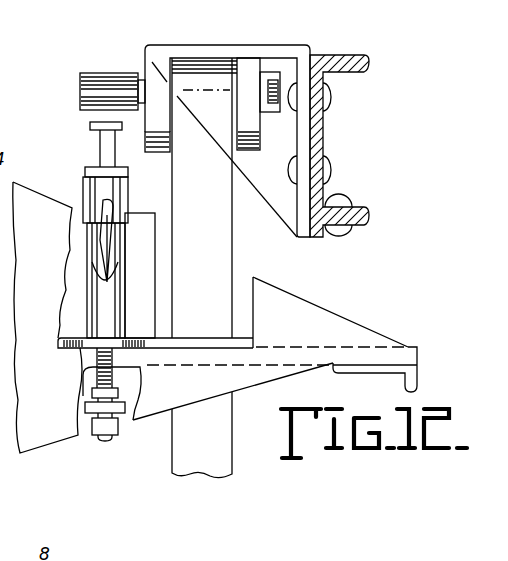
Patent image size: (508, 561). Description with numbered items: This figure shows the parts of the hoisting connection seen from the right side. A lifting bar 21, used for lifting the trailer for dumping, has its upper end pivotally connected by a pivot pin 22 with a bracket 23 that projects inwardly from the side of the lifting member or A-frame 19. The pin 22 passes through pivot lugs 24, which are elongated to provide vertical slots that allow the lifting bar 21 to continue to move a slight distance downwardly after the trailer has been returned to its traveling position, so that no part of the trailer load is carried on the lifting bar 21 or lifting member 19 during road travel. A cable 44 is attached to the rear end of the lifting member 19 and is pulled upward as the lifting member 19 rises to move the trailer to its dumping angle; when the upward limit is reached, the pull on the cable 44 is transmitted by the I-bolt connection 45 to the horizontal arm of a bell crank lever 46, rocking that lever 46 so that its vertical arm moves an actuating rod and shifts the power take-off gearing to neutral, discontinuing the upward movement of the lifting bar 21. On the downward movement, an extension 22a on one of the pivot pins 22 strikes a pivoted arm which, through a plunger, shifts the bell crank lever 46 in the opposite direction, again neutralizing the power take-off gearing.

The lifting member or A-frame 19 is at (317, 132).
The lifting bar 21 is at (222, 248).
The pivot pin 22 is at (223, 82).
The extension on pivot pin 22a is at (92, 92).
The bracket 23 is at (247, 52).
The pivot lug 24 is at (157, 146).
The cable 44 is at (110, 230).
The I-bolt connection 45 is at (110, 308).
The bell crank lever 46 is at (100, 408).